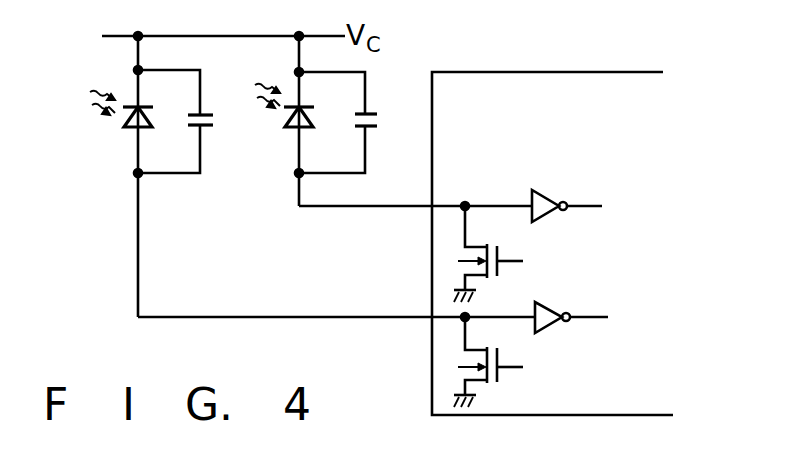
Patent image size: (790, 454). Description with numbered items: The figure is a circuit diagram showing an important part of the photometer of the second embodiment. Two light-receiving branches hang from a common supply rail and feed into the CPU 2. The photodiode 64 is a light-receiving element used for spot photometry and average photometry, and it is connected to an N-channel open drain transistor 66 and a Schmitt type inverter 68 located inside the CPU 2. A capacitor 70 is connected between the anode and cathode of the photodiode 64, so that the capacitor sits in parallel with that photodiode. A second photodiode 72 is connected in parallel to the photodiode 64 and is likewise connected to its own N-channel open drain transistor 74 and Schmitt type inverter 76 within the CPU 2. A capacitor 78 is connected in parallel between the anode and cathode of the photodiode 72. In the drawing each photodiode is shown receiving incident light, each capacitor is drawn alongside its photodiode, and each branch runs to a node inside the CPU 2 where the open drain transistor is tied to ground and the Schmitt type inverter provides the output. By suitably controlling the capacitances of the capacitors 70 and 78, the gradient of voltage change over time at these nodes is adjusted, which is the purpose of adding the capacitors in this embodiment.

The CPU 2 is at (553, 72).
The photodiode 64 is at (286, 124).
The N-channel open drain transistor 66 is at (502, 256).
The Schmitt type inverter 68 is at (561, 199).
The capacitor 70 is at (394, 122).
The photodiode 72 is at (130, 130).
The N-channel open drain transistor 74 is at (500, 381).
The Schmitt type inverter 76 is at (551, 306).
The capacitor 78 is at (205, 128).